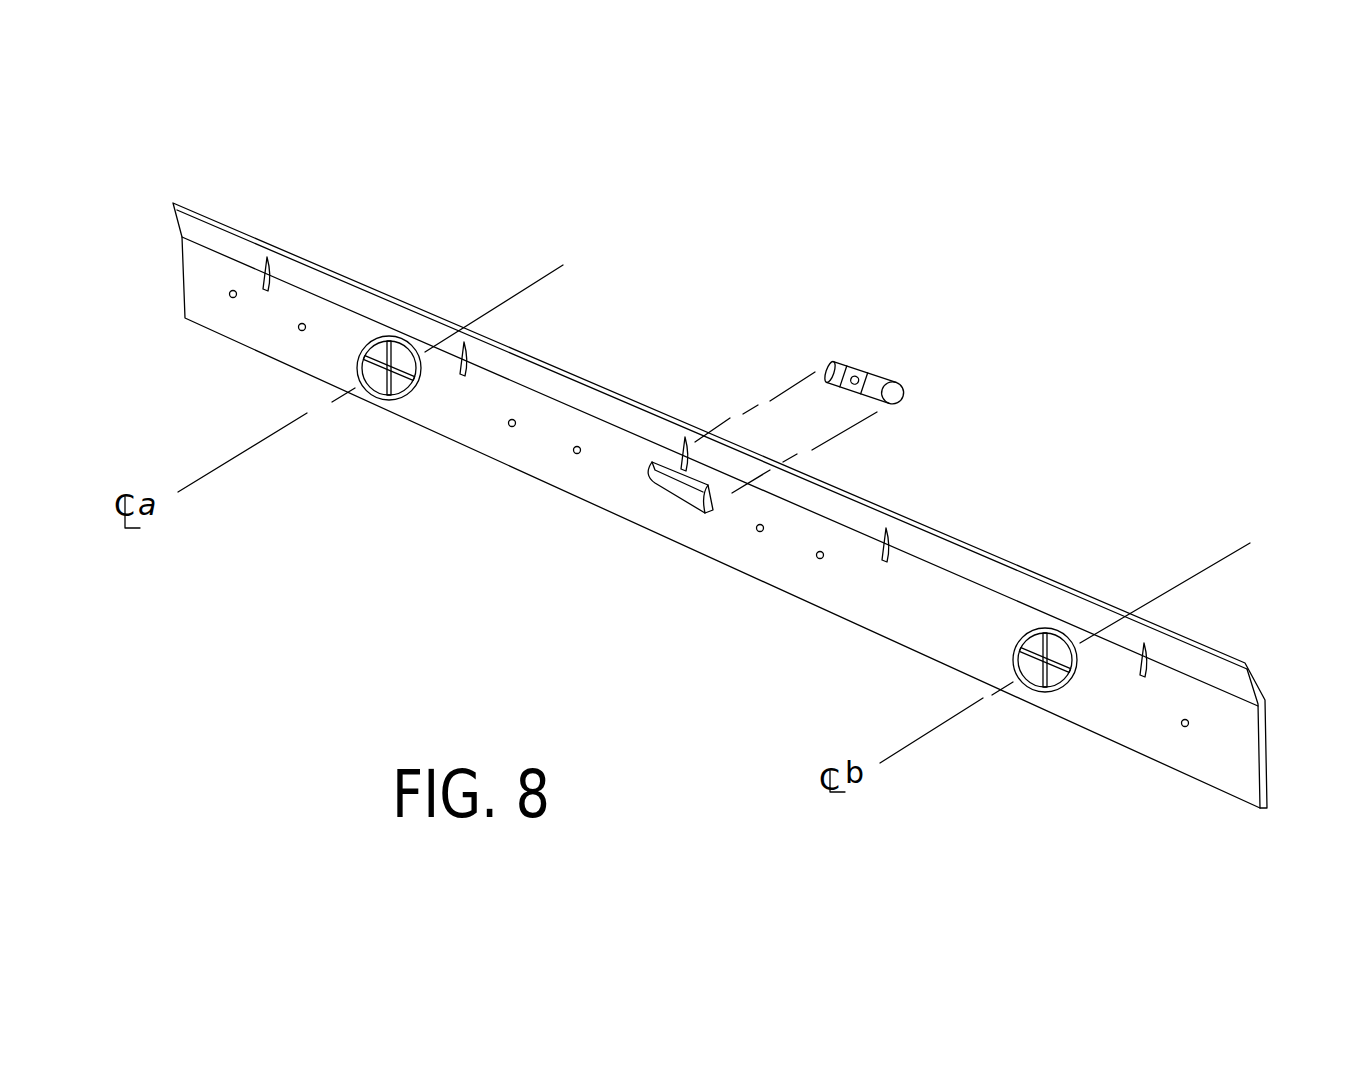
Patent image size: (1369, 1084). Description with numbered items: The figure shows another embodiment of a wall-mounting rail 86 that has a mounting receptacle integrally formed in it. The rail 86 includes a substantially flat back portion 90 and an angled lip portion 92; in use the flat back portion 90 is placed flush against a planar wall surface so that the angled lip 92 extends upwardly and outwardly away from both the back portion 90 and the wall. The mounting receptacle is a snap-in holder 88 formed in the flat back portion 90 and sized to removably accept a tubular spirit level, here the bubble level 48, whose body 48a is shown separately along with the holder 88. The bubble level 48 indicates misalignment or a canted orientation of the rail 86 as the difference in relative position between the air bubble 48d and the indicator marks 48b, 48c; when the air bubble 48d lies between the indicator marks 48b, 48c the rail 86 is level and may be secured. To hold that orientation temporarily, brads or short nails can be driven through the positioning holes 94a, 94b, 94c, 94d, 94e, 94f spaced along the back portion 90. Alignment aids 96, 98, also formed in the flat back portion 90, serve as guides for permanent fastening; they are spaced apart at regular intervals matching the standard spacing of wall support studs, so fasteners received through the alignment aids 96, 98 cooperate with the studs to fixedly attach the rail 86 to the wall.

The wall-mounting rail 86 is at (1284, 747).
The snap-in holder 88 is at (702, 513).
The flat back portion 90 is at (300, 330).
The angled lip portion 92 is at (172, 203).
The positioning hole 94a is at (230, 297).
The positioning hole 94b is at (510, 426).
The positioning hole 94c is at (575, 453).
The positioning hole 94d is at (759, 532).
The positioning hole 94e is at (819, 559).
The positioning hole 94f is at (1183, 727).
The alignment aid 96 is at (382, 400).
The alignment aid 98 is at (1042, 695).
The bubble level 48 is at (905, 326).
The pin body 48a is at (907, 393).
The indicator mark 48b is at (873, 377).
The indicator mark 48c is at (845, 373).
The air bubble 48d is at (830, 365).